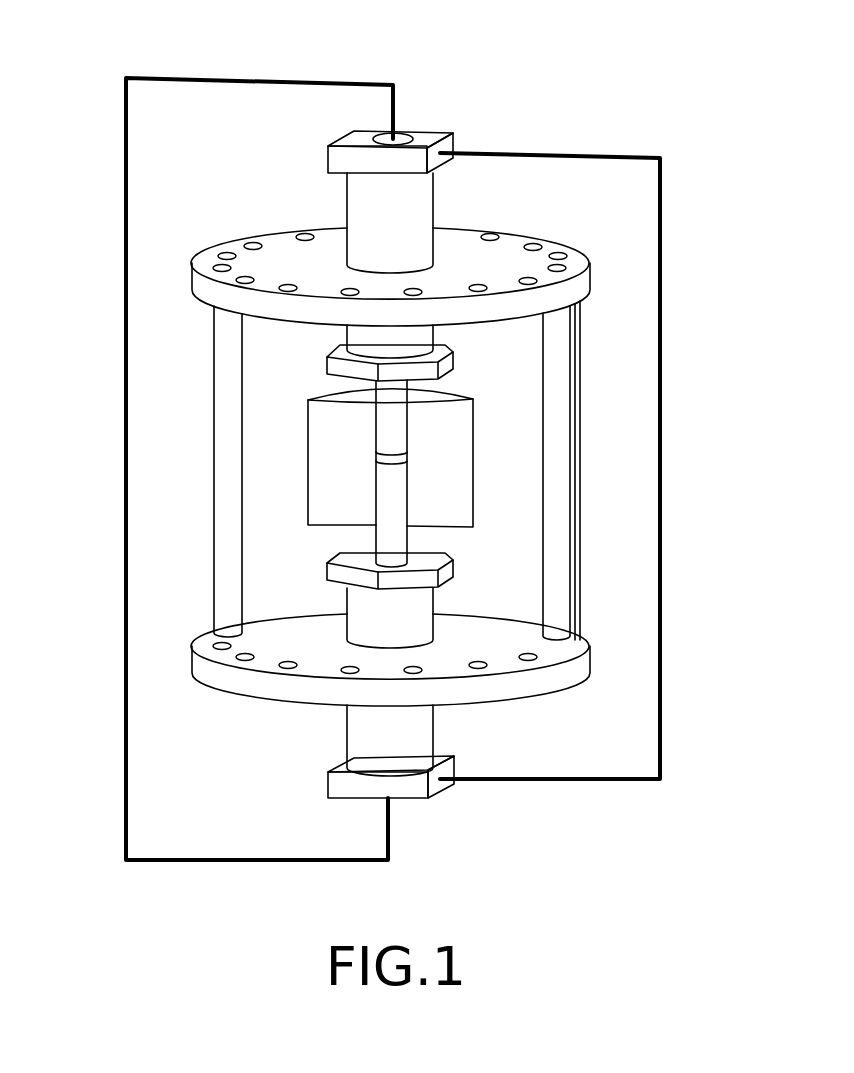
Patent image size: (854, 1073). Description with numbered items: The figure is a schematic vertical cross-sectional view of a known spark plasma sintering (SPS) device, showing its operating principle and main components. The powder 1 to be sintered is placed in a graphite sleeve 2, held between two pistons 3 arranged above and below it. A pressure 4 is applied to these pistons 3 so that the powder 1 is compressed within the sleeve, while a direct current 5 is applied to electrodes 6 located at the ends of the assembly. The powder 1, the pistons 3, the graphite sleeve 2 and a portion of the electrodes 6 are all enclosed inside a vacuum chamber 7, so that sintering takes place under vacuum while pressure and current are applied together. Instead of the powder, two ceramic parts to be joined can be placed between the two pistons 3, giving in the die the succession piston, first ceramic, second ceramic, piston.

The powder 1 is at (392, 457).
The graphite sleeve 2 is at (452, 468).
The pistons 3 is at (393, 422).
The pressure 4 is at (260, 74).
The direct current 5 is at (662, 178).
The electrodes 6 is at (413, 203).
The vacuum chamber 7 is at (228, 362).